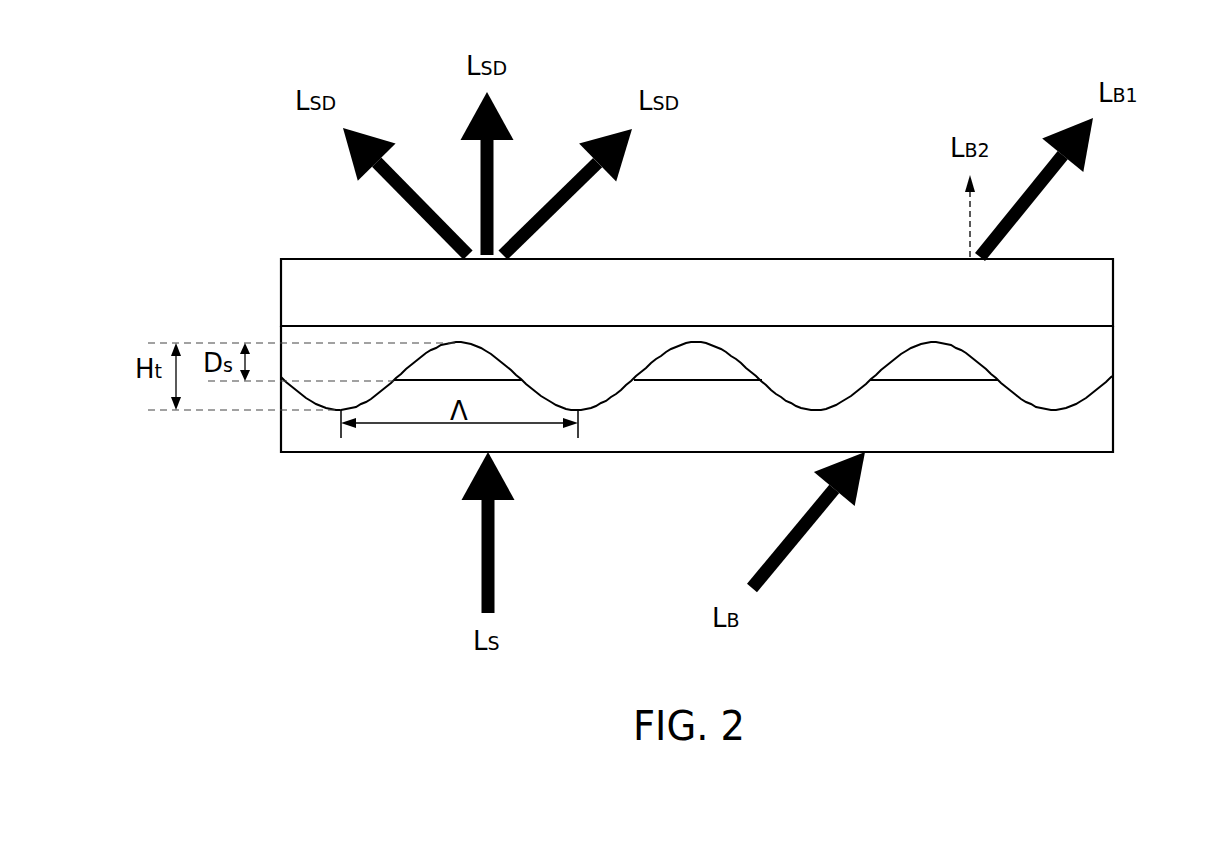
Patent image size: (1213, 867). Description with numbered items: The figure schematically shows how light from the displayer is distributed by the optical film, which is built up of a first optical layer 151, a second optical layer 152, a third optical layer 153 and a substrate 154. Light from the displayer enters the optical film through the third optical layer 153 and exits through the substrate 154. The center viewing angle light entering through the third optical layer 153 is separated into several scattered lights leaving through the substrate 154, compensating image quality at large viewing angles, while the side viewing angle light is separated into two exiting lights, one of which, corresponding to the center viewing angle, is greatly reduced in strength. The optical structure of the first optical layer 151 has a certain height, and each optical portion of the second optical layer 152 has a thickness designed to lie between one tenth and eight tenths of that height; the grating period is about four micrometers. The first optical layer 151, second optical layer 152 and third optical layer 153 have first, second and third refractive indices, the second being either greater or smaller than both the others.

The first optical layer 151 is at (1110, 358).
The second optical layer 152 is at (478, 362).
The third optical layer 153 is at (1110, 422).
The substrate 154 is at (1110, 293).